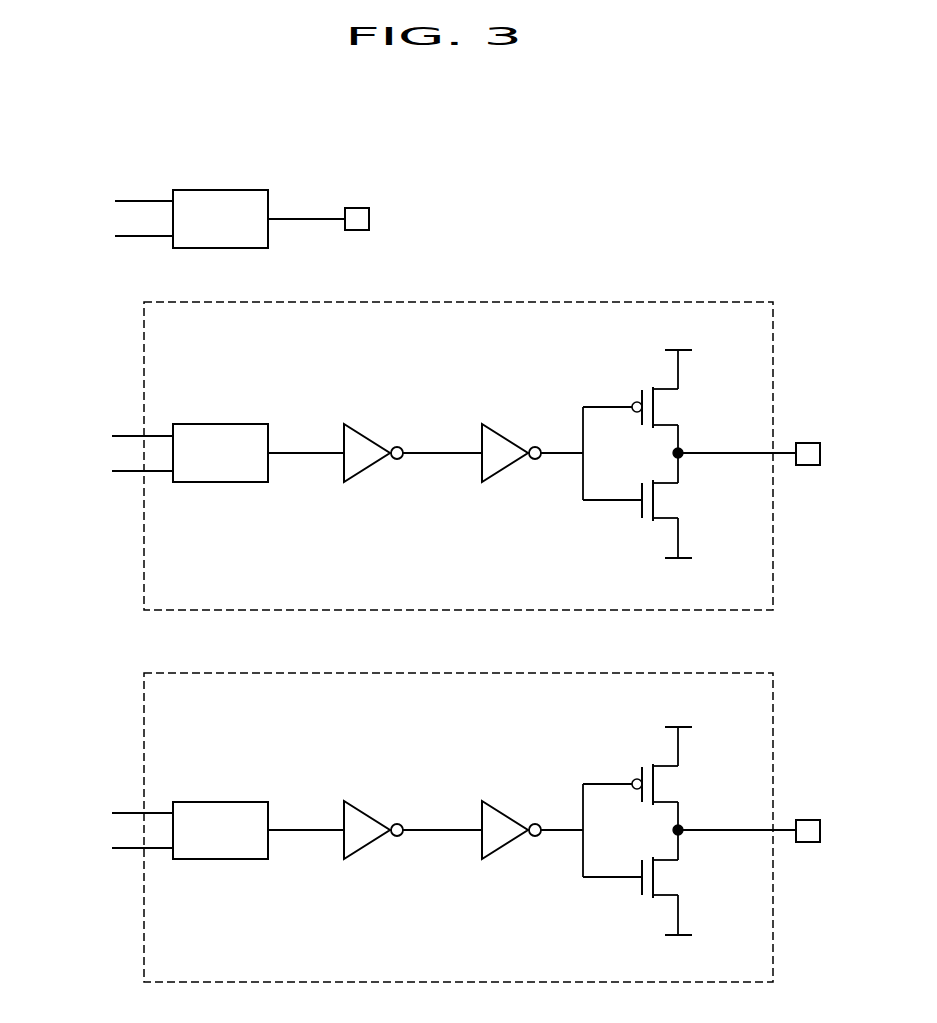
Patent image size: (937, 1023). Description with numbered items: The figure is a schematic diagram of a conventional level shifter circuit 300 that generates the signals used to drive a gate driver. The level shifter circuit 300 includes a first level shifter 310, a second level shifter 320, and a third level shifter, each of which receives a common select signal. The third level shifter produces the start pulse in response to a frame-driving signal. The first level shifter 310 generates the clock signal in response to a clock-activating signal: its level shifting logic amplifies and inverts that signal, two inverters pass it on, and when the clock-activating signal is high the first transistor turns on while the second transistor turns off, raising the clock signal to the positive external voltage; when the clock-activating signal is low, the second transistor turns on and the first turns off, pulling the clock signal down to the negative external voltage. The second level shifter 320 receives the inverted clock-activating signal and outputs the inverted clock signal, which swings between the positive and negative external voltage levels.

The level shifter circuit 300 is at (649, 191).
The first level shifter 310 is at (488, 302).
The second level shifter 320 is at (488, 673).